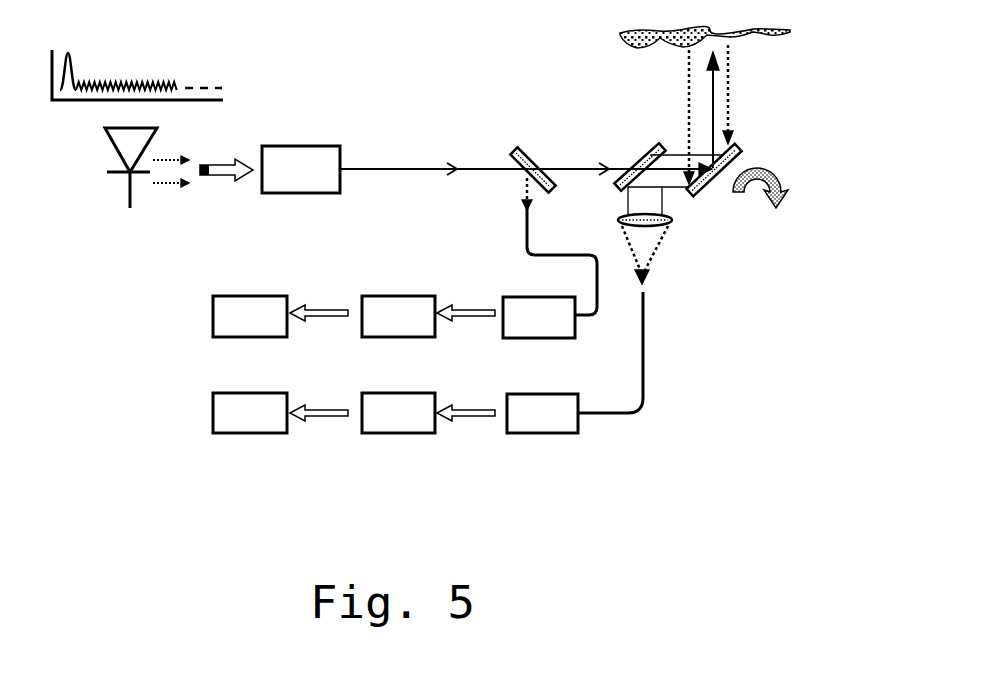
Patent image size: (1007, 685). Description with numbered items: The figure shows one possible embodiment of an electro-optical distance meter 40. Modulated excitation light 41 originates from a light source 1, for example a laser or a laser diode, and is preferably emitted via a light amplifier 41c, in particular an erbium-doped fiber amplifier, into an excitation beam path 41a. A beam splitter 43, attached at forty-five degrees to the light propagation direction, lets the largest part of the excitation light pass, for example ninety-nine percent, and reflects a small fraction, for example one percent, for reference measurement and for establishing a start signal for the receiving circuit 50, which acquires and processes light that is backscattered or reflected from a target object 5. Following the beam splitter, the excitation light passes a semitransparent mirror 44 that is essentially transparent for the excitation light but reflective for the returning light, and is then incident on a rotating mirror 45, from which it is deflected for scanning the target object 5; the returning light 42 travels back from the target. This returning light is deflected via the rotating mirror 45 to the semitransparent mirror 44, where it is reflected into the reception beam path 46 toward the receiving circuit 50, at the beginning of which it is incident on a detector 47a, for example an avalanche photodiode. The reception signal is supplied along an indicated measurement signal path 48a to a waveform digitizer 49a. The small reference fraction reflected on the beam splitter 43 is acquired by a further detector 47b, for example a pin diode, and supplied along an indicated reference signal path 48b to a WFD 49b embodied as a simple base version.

The light source 1 is at (122, 178).
The target object 5 is at (760, 38).
The electro-optical distance meter 40 is at (392, 90).
The modulated excitation light 41 is at (173, 184).
The excitation beam path 41a is at (710, 127).
The light amplifier 41c is at (325, 146).
The reflected light beams 42 is at (693, 118).
The beam splitter 43 is at (540, 180).
The semitransparent mirror 44 is at (638, 167).
The rotating mirror 45 is at (715, 185).
The reception beam path 46 is at (652, 348).
The detector 47a is at (565, 437).
The further detector 47b is at (535, 297).
The measurement signal path 48a is at (470, 423).
The reference signal path 48b is at (463, 302).
The waveform digitizer 49a is at (248, 433).
The WFD 49b is at (247, 296).
The receiving circuit 50 is at (181, 360).